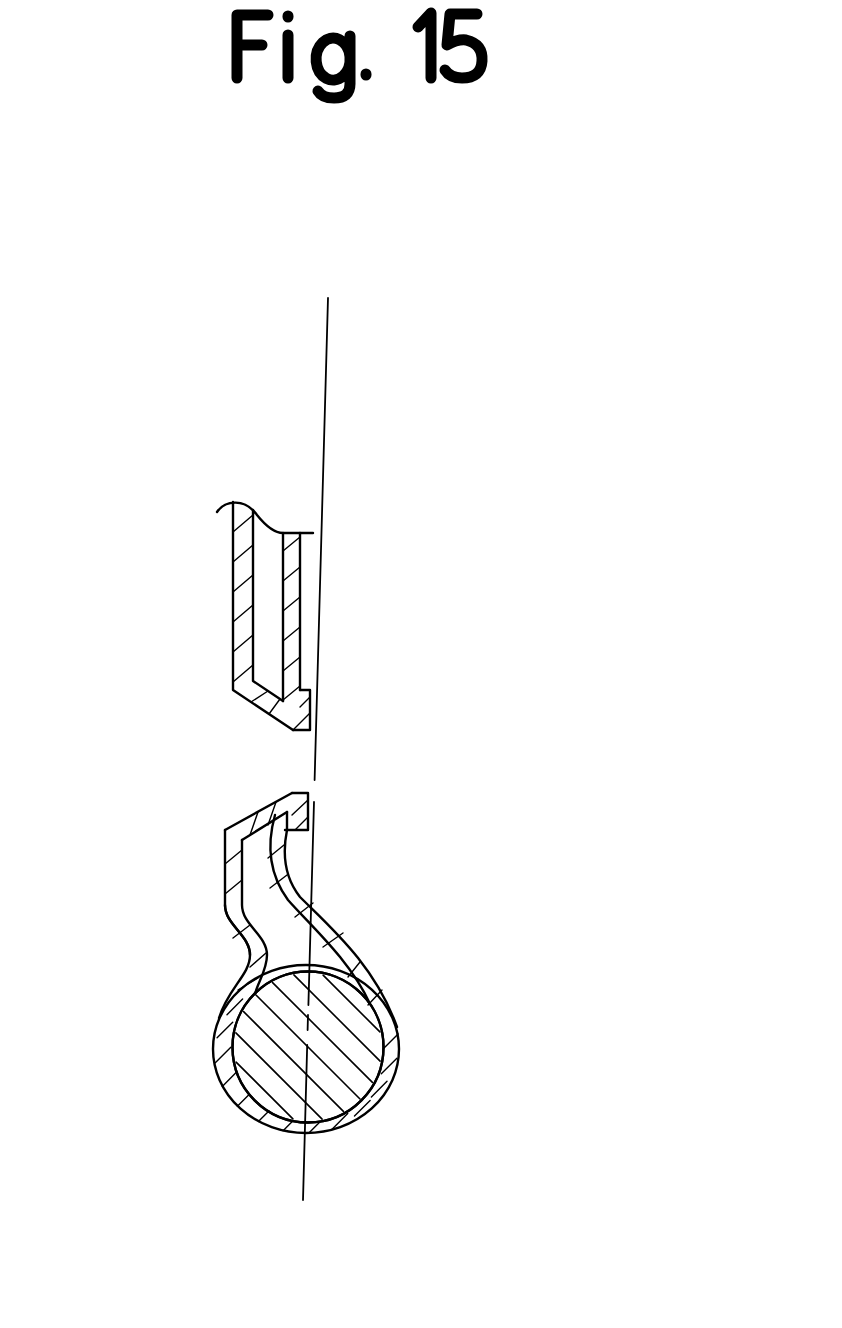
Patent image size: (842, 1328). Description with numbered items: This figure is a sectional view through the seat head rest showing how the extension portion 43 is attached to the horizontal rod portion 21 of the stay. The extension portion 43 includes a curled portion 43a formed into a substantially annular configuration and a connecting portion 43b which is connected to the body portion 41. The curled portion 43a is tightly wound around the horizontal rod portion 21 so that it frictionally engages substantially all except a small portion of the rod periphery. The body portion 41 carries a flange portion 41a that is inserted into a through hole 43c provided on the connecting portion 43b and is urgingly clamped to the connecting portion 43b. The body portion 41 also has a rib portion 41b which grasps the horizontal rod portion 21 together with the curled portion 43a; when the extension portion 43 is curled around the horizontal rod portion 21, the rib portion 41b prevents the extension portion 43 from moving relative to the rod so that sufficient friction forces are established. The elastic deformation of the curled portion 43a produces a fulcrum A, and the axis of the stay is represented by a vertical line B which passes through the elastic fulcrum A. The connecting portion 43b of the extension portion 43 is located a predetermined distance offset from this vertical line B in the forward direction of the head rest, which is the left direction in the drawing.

The horizontal rod portion 21 is at (347, 1046).
The body portion 41 is at (290, 875).
The flange portion 41a is at (300, 803).
The first rib portion 41b is at (252, 955).
The extension portion 43 is at (286, 616).
The curled portion 43a is at (335, 1136).
The connecting portion 43b is at (287, 645).
The through hole 43c is at (296, 704).
The fulcrum A is at (303, 1135).
The vertical line B is at (323, 716).